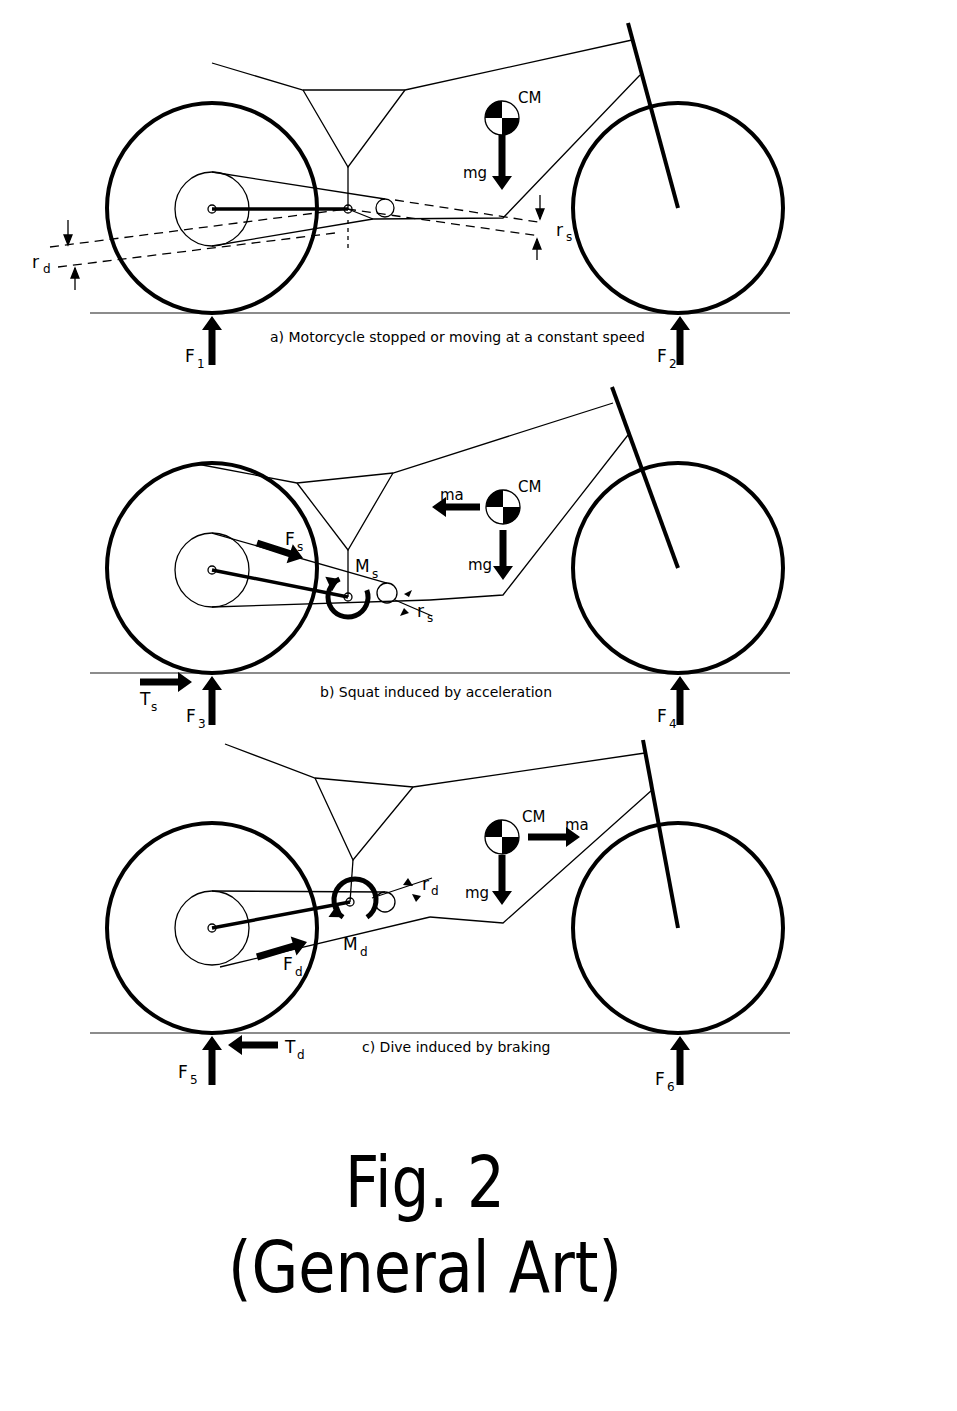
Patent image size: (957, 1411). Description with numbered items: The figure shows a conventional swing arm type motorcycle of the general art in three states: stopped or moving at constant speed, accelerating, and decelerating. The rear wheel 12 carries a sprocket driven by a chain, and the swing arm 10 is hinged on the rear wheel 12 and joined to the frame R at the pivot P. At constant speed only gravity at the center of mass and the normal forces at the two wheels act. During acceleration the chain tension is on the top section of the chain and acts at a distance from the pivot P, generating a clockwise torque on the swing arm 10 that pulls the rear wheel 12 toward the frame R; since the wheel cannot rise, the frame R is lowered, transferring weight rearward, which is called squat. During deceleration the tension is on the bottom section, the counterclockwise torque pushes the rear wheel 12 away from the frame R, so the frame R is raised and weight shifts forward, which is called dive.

The swing arm 10 is at (267, 203).
The rear wheel 12 is at (118, 157).
The frame R is at (303, 90).
The pivot P is at (347, 215).